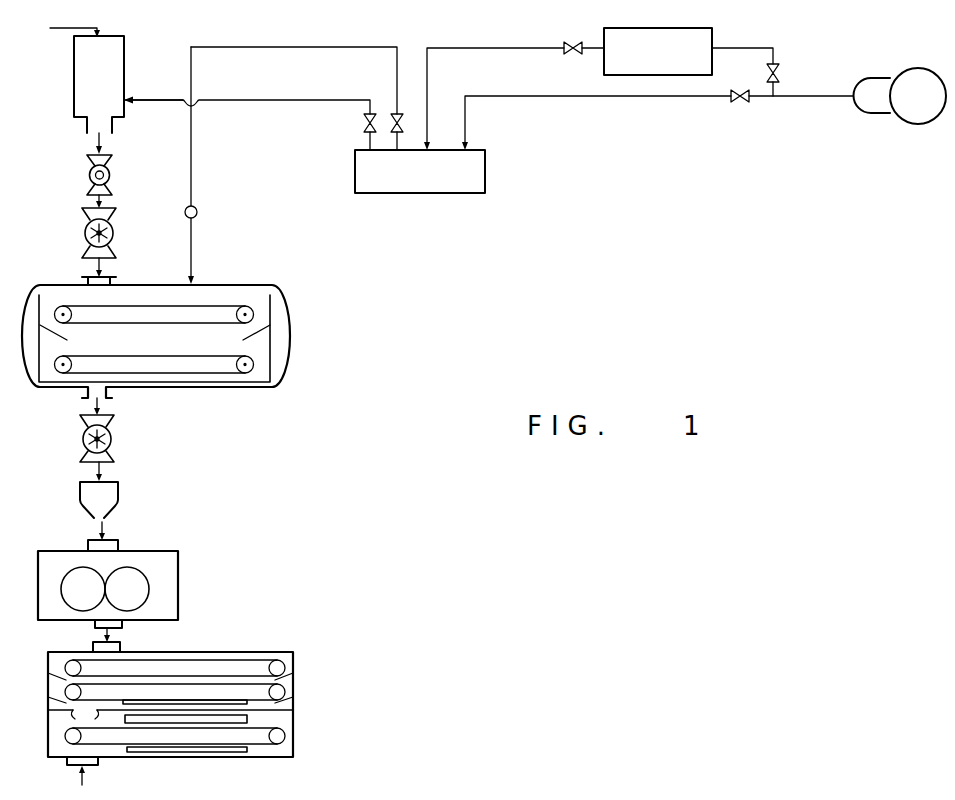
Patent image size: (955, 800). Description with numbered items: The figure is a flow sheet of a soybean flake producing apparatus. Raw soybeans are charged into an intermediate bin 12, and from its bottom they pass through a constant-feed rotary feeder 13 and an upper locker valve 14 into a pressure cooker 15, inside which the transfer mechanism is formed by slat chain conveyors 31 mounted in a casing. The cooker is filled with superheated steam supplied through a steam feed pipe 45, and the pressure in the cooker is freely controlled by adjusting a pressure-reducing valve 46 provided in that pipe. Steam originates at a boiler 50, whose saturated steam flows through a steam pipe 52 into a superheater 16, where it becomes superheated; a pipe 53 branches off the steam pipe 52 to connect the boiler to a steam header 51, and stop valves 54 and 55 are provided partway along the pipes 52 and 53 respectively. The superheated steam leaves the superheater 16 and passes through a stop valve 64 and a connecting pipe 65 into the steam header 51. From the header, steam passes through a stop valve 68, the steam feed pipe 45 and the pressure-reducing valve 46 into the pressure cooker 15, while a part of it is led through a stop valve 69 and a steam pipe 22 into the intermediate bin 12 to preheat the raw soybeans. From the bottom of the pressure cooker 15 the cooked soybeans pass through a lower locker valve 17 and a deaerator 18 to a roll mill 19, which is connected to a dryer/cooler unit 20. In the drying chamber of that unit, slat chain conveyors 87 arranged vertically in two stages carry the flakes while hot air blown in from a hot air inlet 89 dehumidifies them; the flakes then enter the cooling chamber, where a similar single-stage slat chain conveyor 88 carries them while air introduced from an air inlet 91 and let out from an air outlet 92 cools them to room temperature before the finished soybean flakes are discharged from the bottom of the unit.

The intermediate bin 12 is at (74, 94).
The constant-feed rotary feeder 13 is at (87, 180).
The upper locker valve 14 is at (114, 239).
The pressure cooker 15 is at (167, 283).
The slat chain conveyors 31 is at (238, 298).
The pressure-reducing valve 46 is at (197, 212).
The steam pipe 22 is at (238, 103).
The steam feed pipe 45 is at (290, 50).
The stop valve 69 is at (365, 121).
The stop valve 68 is at (395, 114).
The steam header 51 is at (432, 197).
The connecting pipe 65 is at (493, 50).
The stop valve 64 is at (570, 55).
The superheater 16 is at (746, 76).
The pipe 53 is at (594, 97).
The stop valve 54 is at (778, 72).
The stop valve 55 is at (743, 100).
The steam pipe 52 is at (813, 98).
The boiler 50 is at (932, 118).
The lower locker valve 17 is at (80, 448).
The deaerator 18 is at (120, 497).
The roll mill 19 is at (69, 551).
The dryer/cooler unit 20 is at (273, 652).
The slat chain conveyors 87 is at (222, 660).
The hot air inlet 89 is at (148, 700).
The air outlet 92 is at (247, 722).
The slat chain conveyor 88 is at (293, 736).
The air inlet 91 is at (214, 752).